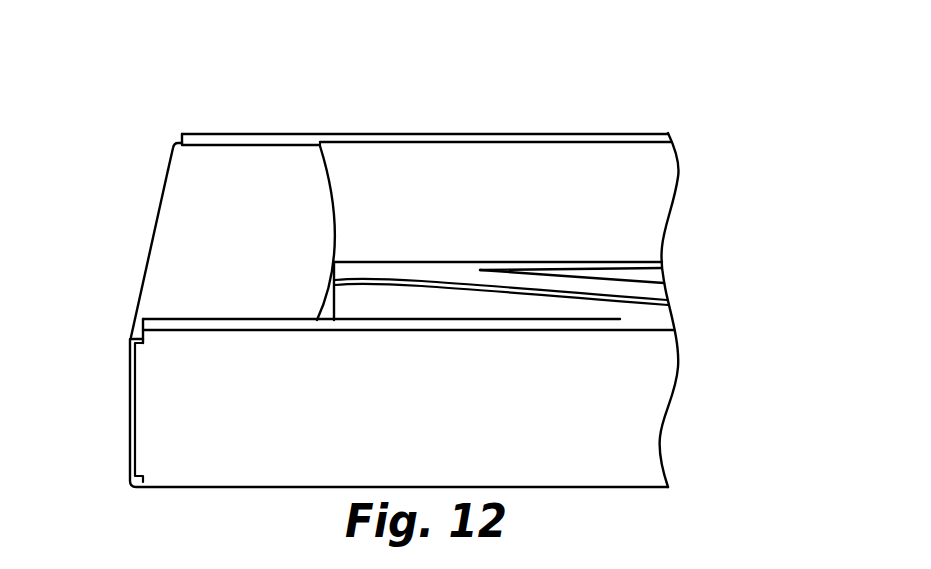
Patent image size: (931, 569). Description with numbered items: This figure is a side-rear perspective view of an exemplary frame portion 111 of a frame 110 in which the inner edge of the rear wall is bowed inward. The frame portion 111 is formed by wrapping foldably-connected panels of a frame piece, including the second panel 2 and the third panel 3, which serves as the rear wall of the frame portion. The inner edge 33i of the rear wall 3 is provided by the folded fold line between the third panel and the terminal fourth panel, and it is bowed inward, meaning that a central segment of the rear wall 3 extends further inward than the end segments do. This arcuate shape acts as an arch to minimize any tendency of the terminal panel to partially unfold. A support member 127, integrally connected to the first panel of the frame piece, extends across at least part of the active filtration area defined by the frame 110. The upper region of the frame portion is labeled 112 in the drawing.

The frame 110 is at (734, 57).
The frame portion 111 is at (115, 148).
The upper panel 112 is at (532, 105).
The third panel 3 is at (167, 237).
The inner edge 33i is at (333, 217).
The support member 127 is at (658, 292).
The second panel 2 is at (130, 375).